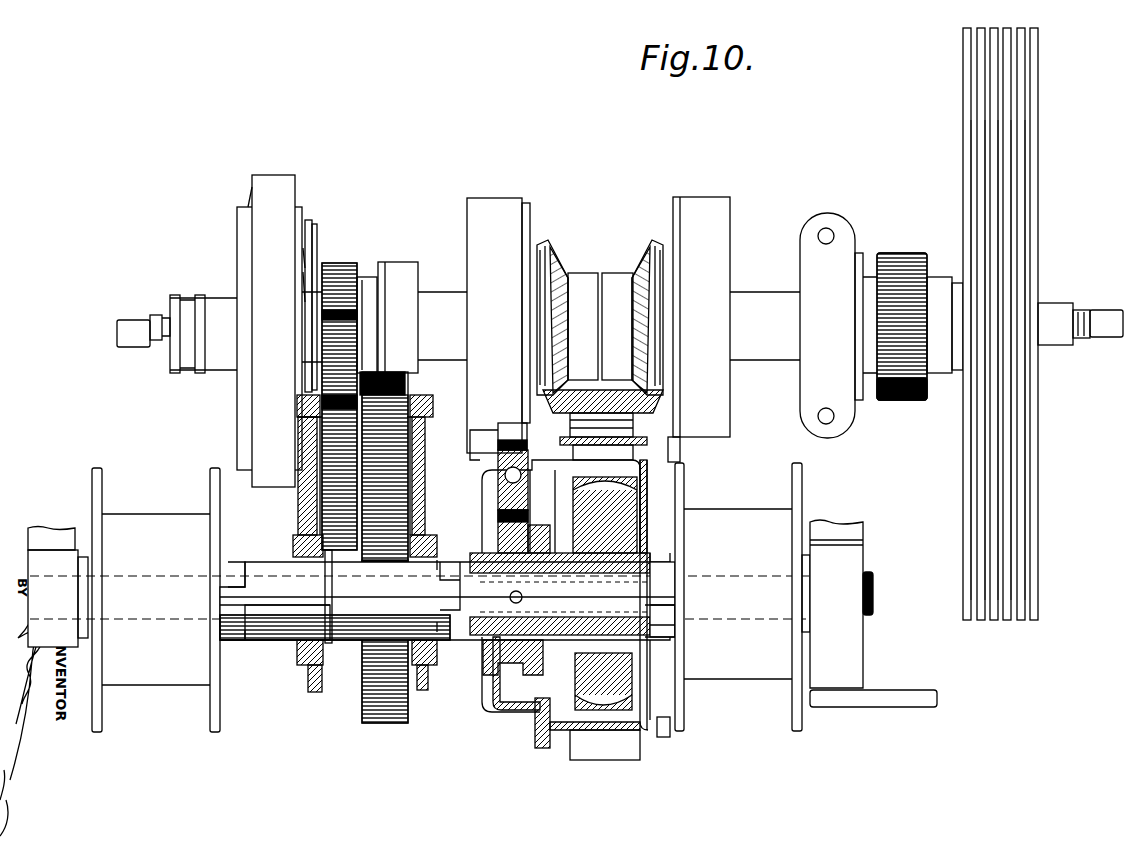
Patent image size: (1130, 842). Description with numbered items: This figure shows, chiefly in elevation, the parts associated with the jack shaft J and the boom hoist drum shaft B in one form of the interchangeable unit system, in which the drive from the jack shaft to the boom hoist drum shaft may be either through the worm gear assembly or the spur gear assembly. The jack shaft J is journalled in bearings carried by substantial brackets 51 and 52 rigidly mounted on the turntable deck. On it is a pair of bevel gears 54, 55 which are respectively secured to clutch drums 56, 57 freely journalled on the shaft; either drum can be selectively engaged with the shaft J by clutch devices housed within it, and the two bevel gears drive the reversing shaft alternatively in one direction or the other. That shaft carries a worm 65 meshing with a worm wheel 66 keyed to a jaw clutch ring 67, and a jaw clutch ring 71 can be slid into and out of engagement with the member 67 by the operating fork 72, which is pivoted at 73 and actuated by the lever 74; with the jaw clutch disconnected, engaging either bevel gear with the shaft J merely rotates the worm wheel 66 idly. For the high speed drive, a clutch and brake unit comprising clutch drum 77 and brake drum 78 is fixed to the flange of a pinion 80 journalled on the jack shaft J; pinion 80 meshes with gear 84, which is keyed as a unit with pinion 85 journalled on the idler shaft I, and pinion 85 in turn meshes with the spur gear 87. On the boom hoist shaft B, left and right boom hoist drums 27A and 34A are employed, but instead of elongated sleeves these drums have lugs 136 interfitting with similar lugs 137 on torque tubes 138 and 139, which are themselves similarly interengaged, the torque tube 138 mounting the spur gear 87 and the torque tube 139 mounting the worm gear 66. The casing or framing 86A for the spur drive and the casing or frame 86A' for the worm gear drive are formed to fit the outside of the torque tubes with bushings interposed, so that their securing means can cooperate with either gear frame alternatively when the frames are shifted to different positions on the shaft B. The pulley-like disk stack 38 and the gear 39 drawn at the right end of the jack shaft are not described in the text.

The jack shaft J is at (117, 332).
The clutch drum 77 is at (240, 232).
The brake drum 78 is at (282, 175).
The pinion 80 is at (332, 263).
The gear 84 is at (359, 310).
The bracket 51 is at (418, 278).
The clutch drum 56 is at (492, 202).
The bevel gear 54 is at (552, 250).
The bevel gear 55 is at (638, 252).
The clutch drum 57 is at (697, 207).
The bracket 52 is at (806, 266).
The gear 39 is at (890, 399).
The pulley / disk stack 38 is at (1038, 462).
The idler shaft I is at (435, 418).
The pinion 85 is at (403, 395).
The spur gear 87 is at (372, 723).
The left boom hoist drum 27A is at (134, 676).
The lugs 137 is at (230, 572).
The lugs 136 is at (231, 640).
The torque tube 138 is at (282, 624).
The torque tube 139 is at (447, 635).
The casing or framing for the spur drive 86A is at (373, 687).
The casing or frame for the worm gear drive 86A' is at (496, 694).
The lever 74 is at (498, 436).
The pivot 73 is at (498, 468).
The operating fork 72 is at (498, 514).
The jaw clutch ring 71 is at (547, 680).
The jaw clutch ring 67 is at (584, 742).
The worm wheel 66 is at (643, 735).
The worm 65 is at (678, 617).
The right boom hoist drum 34A is at (718, 678).
The boom hoist shaft B is at (874, 580).